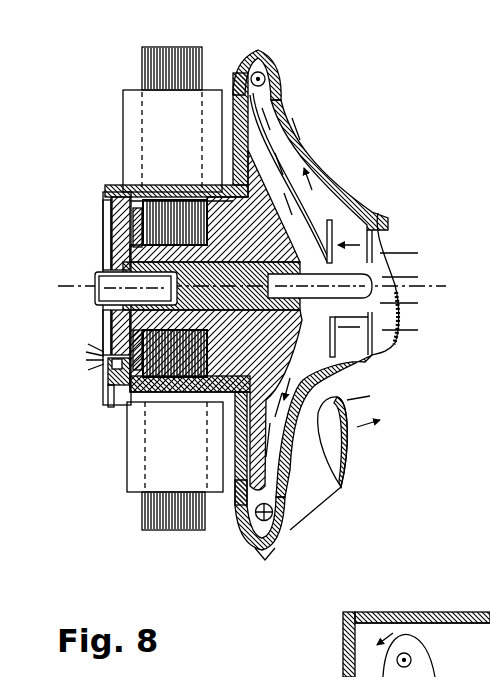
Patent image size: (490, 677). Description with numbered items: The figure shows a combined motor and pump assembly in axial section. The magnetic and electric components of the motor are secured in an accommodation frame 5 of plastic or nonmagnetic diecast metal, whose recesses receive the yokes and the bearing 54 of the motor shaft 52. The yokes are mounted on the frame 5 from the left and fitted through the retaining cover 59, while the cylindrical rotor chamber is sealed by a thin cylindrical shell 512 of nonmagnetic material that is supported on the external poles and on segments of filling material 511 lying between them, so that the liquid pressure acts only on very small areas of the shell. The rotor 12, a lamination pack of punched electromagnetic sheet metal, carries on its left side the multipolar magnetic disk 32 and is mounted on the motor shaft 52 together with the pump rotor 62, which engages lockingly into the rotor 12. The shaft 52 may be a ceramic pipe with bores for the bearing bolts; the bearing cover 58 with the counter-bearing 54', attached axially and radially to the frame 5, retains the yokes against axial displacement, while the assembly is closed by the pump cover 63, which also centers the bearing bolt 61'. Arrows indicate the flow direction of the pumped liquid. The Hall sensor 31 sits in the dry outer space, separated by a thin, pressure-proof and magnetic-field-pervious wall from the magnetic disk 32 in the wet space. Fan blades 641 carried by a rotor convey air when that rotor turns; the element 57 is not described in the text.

The accommodation frame 5 is at (228, 550).
The rotor 12 is at (185, 185).
The Hall sensor 31 is at (104, 378).
The multipolar magnetic disk 32 is at (103, 200).
The motor shaft 52 is at (268, 197).
The bearing 54 is at (81, 233).
The counter-bearing 54' is at (79, 332).
The housing pivot 57 is at (247, 68).
The bearing cover 58 is at (99, 277).
The retaining cover 59 is at (113, 188).
The bearing bolt 61' is at (368, 369).
The pump rotor 62 is at (262, 150).
The pump cover 63 is at (321, 213).
The segments of filling material 511 is at (167, 400).
The cylindrical shell 512 is at (150, 194).
The fan blades 641 is at (445, 676).